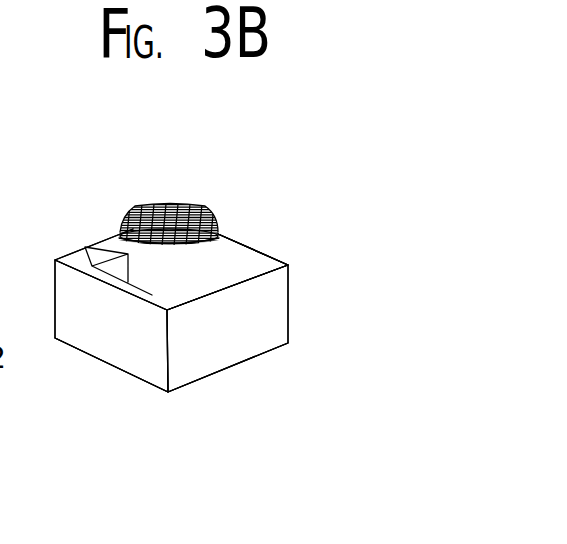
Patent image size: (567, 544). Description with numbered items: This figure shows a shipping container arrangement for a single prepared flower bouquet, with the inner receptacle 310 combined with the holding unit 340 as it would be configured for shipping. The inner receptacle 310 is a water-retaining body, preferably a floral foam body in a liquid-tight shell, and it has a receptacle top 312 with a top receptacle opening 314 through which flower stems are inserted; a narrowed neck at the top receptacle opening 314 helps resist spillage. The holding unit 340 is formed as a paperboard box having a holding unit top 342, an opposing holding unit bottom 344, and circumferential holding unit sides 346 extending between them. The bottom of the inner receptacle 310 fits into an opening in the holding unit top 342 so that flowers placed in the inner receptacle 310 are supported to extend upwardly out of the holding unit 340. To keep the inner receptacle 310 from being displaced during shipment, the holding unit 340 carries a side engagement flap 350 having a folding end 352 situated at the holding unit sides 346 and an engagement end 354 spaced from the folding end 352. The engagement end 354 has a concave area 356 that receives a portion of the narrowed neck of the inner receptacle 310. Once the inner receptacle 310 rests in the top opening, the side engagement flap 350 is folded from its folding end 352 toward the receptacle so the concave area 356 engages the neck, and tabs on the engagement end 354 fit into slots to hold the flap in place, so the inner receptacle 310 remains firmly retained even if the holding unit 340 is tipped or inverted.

The inner receptacle 310 is at (125, 232).
The receptacle top 312 is at (145, 203).
The top receptacle opening 314 is at (168, 205).
The holding unit 340 is at (238, 243).
The holding unit top 342 is at (258, 253).
The holding unit bottom 344 is at (188, 383).
The holding unit sides 346 is at (220, 325).
The side engagement flap 350 is at (220, 265).
The folding end 352 is at (221, 238).
The engagement end 354 is at (152, 294).
The concave area 356 is at (123, 248).